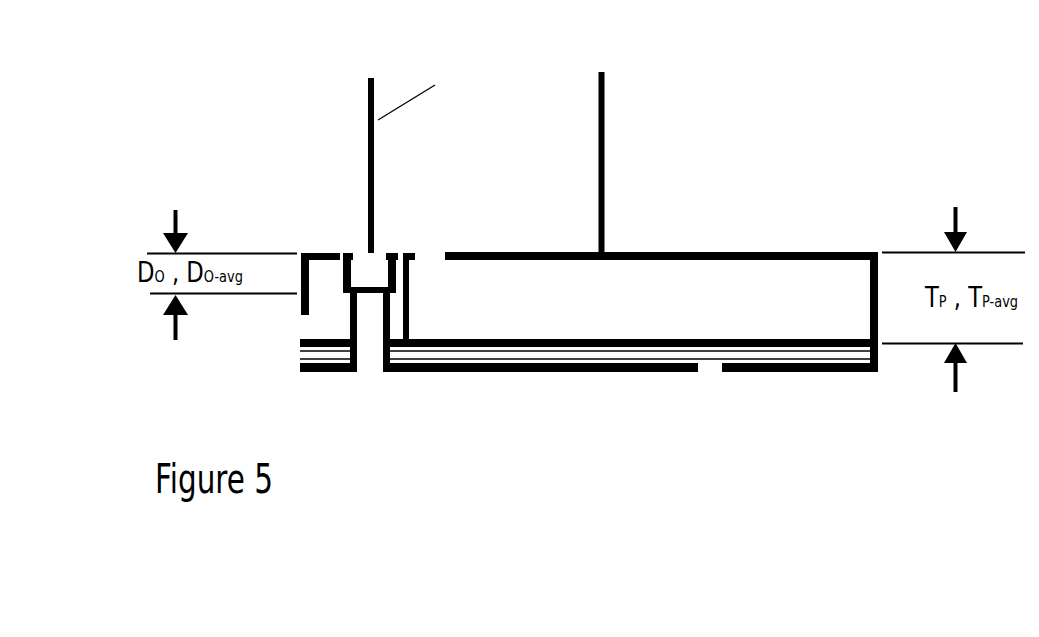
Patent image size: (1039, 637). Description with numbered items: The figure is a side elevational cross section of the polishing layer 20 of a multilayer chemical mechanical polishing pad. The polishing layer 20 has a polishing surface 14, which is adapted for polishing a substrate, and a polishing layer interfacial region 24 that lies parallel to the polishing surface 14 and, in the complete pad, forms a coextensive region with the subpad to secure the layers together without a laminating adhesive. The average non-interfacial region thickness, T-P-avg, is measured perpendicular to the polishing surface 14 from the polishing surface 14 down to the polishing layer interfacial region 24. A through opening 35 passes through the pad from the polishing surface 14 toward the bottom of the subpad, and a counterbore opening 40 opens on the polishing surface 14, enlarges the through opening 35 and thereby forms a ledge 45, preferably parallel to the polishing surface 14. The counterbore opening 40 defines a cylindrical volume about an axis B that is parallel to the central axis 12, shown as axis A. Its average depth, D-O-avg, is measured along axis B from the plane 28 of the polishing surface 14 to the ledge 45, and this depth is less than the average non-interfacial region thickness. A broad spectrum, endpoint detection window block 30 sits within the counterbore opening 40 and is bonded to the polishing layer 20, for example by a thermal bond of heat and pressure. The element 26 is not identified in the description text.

The central axis 12 is at (608, 118).
The polishing surface 14 is at (825, 247).
The polishing layer 20 is at (292, 92).
The polishing layer interfacial region 24 is at (707, 353).
The channel 26 is at (358, 360).
The plane of the polishing surface 28 is at (718, 248).
The broad spectrum, endpoint detection window block 30 is at (368, 270).
The through opening 35 is at (357, 318).
The counterbore opening 40 is at (403, 277).
The ledge 45 is at (347, 295).